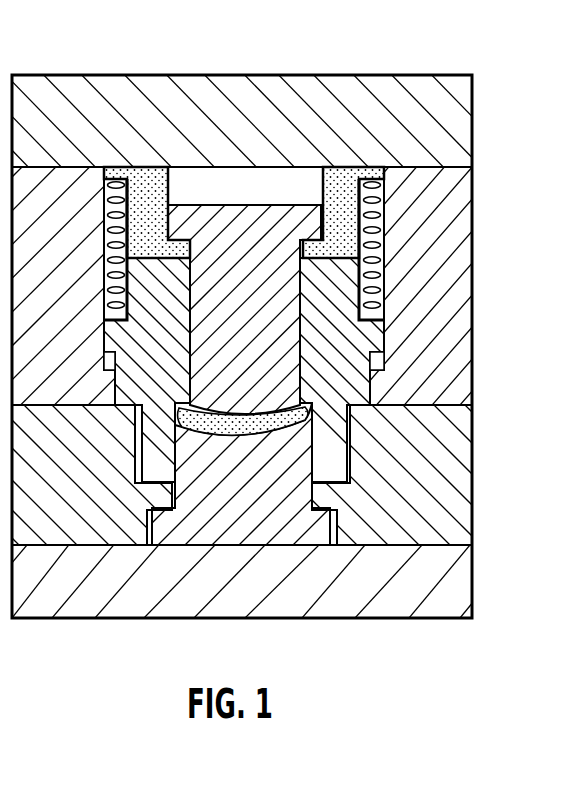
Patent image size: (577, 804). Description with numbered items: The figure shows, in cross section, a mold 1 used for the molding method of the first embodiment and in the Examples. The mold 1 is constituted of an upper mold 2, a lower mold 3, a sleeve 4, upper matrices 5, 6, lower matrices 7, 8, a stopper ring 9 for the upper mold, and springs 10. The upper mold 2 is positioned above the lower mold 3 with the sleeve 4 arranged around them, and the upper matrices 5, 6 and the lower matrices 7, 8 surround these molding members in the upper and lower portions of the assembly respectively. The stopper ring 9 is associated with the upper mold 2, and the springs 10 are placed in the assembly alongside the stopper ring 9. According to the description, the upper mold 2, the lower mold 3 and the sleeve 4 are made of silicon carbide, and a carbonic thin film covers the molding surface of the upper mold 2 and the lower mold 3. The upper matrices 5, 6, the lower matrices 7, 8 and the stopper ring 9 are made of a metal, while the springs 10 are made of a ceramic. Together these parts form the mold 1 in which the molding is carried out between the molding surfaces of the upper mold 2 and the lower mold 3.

The mold 1 is at (412, 50).
The upper mold 2 is at (253, 220).
The lower mold 3 is at (243, 522).
The sleeve 4 is at (347, 389).
The upper matrix 5 is at (447, 346).
The upper matrix 6 is at (458, 123).
The lower matrix 7 is at (450, 488).
The lower matrix 8 is at (433, 579).
The stopper ring 9 is at (347, 228).
The springs 10 is at (366, 291).